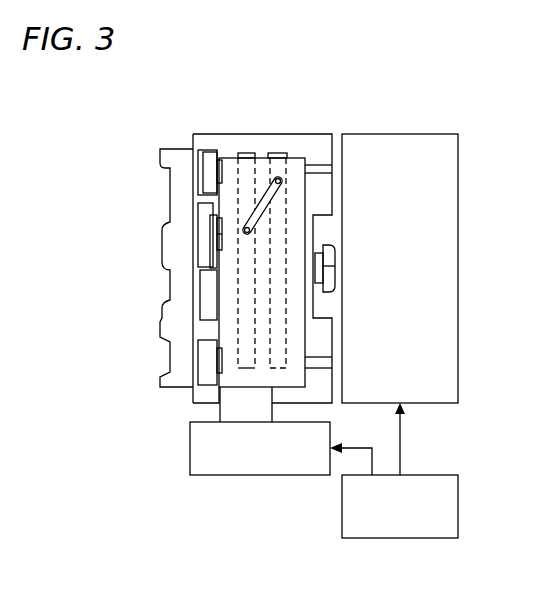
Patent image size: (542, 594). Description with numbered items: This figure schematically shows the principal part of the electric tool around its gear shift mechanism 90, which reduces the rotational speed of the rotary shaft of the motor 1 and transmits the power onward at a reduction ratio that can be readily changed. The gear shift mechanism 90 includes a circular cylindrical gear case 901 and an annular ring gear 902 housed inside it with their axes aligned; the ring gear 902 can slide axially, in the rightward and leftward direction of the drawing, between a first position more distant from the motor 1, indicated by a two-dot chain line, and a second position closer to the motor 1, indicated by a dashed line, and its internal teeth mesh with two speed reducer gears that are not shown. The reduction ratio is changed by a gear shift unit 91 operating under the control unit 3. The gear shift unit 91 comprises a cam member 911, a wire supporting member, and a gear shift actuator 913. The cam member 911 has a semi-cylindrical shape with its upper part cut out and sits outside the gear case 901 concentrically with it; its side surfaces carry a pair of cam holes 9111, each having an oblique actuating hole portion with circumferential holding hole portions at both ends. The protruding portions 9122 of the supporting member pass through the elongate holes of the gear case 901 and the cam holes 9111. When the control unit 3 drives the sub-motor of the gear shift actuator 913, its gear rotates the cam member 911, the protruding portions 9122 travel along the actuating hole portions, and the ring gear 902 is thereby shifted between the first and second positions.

The motor 1 is at (452, 218).
The control unit 3 is at (455, 497).
The gear shift mechanism 90 is at (203, 130).
The gear case 901 is at (317, 138).
The ring gear 902 is at (278, 153).
The gear shift unit 91 is at (185, 458).
The cam member 911 is at (226, 329).
The cam holes 9111 is at (280, 182).
The protruding portions 9122 is at (247, 233).
The gear shift actuator 913 is at (260, 468).